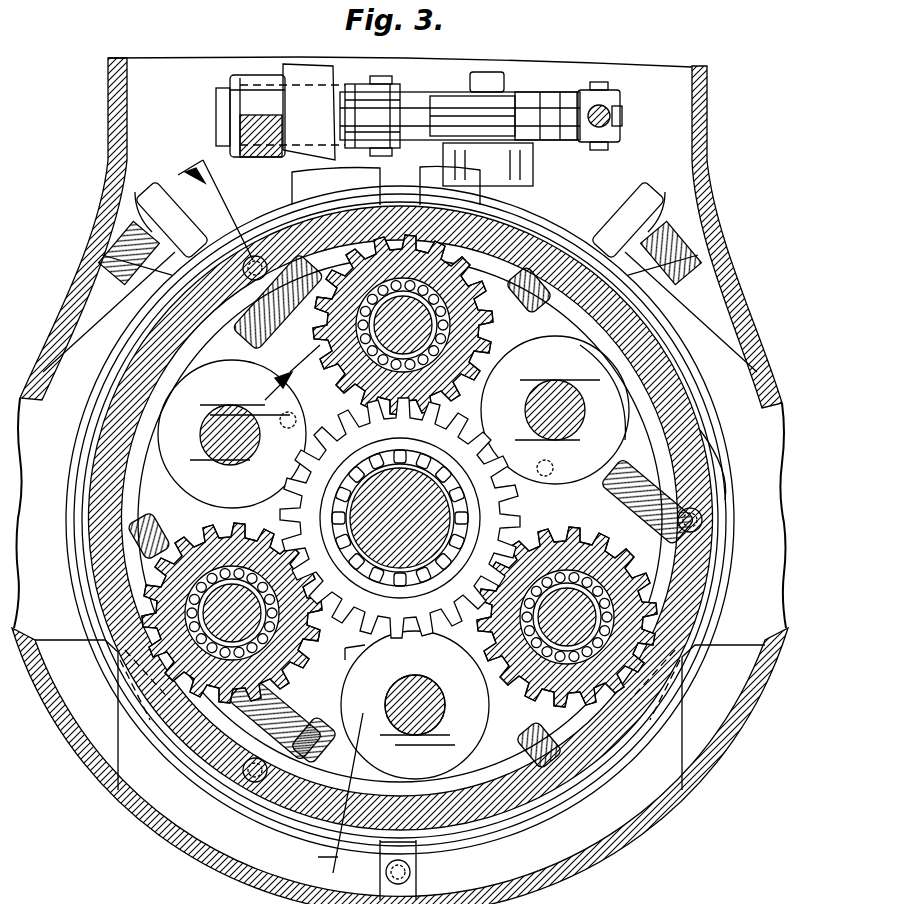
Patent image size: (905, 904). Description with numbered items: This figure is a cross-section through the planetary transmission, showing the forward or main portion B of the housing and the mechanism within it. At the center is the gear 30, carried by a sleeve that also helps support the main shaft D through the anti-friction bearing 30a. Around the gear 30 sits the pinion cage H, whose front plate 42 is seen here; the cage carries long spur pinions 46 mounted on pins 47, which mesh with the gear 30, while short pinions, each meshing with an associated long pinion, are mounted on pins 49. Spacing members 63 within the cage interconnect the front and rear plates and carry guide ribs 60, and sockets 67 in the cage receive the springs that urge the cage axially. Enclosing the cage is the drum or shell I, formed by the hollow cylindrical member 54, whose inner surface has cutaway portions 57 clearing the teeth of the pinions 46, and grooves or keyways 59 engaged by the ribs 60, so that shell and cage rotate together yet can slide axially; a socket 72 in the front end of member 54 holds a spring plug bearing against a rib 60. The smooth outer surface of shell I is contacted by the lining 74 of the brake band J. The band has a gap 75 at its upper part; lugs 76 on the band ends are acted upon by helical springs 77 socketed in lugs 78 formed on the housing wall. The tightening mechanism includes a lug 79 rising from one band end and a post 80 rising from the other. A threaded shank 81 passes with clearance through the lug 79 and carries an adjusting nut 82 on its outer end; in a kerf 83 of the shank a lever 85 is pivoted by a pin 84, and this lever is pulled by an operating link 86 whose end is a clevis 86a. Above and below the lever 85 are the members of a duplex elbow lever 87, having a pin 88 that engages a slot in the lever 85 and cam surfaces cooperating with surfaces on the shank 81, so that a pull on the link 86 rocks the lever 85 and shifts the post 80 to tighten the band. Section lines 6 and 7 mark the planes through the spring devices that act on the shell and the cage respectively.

The adjusting nut 82 is at (250, 80).
The lug 79 is at (300, 70).
The kerf 83 is at (370, 95).
The pin 84 is at (395, 100).
The duplex elbow lever 87 is at (515, 100).
The lever 85 is at (530, 118).
The pin 88 is at (580, 80).
The operating link 86 is at (615, 102).
The clevis 86a is at (620, 128).
The threaded shank 81 is at (218, 105).
The forward or main portion of main housing B is at (130, 104).
The post 80 is at (520, 162).
The gap or interruption 75 is at (440, 195).
The lugs 76 is at (152, 185).
The helical springs 77 is at (140, 200).
The lugs 78 is at (125, 218).
The section line 6- 6 is at (250, 275).
The long spur pinions 46 is at (485, 322).
The anti-friction bearing 30a is at (355, 470).
The gear 30 is at (455, 445).
The socket 67 is at (283, 416).
The pinion cage H is at (620, 411).
The pinion cage drum or shell I is at (690, 392).
The hollow cylindrical member 54 is at (690, 422).
The brake band J is at (728, 478).
The front plate 42 is at (165, 498).
The main shaft D is at (440, 520).
The spacing members 63 is at (635, 515).
The guide ribs 60 is at (702, 510).
The socket 72 is at (705, 528).
The grooves or keyways 59 is at (700, 555).
The cutaway portions 57 is at (140, 615).
The section line 7- 7 is at (331, 764).
The pins 49 is at (430, 700).
The lining 74 is at (635, 735).
The pins 47 is at (170, 720).